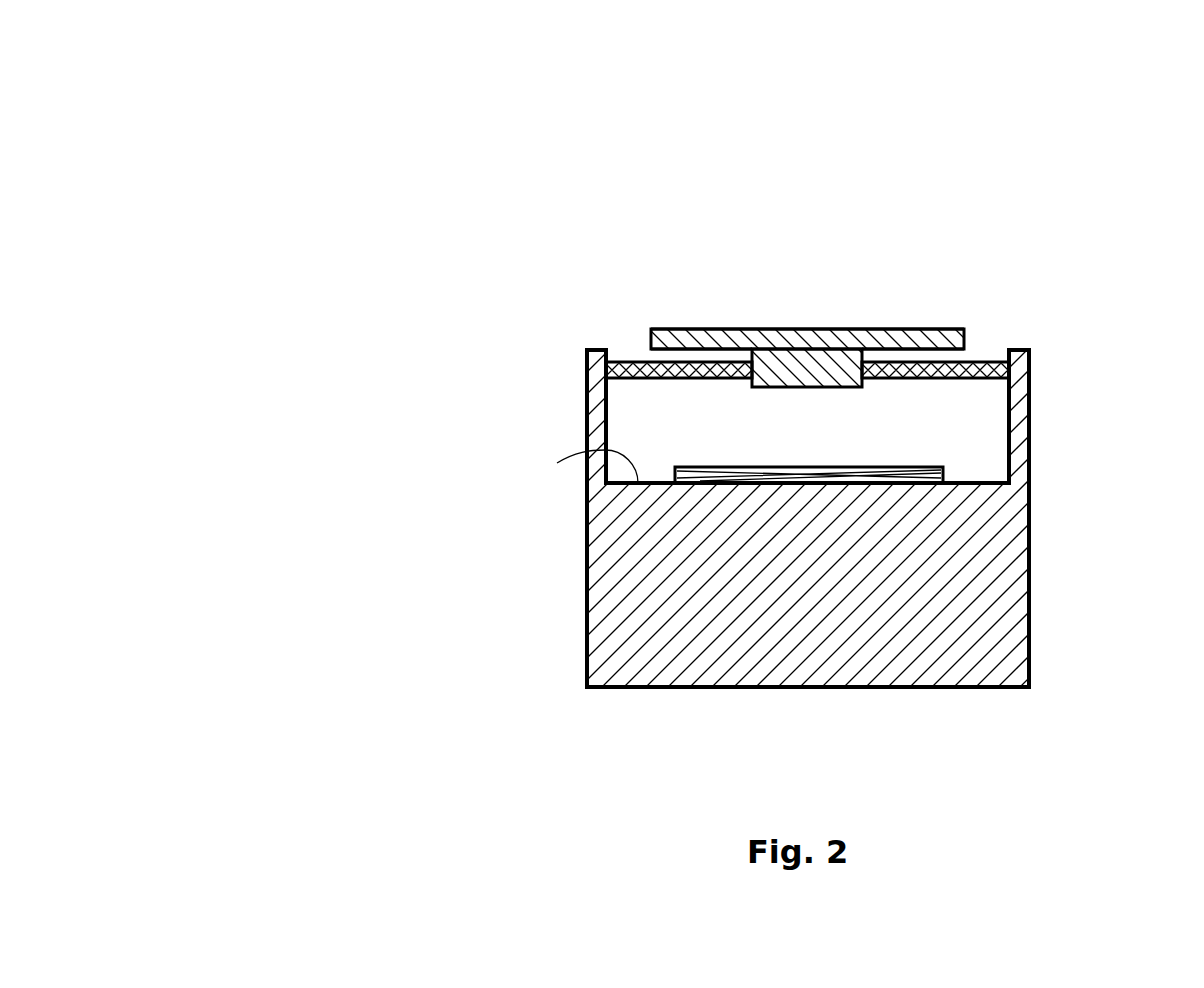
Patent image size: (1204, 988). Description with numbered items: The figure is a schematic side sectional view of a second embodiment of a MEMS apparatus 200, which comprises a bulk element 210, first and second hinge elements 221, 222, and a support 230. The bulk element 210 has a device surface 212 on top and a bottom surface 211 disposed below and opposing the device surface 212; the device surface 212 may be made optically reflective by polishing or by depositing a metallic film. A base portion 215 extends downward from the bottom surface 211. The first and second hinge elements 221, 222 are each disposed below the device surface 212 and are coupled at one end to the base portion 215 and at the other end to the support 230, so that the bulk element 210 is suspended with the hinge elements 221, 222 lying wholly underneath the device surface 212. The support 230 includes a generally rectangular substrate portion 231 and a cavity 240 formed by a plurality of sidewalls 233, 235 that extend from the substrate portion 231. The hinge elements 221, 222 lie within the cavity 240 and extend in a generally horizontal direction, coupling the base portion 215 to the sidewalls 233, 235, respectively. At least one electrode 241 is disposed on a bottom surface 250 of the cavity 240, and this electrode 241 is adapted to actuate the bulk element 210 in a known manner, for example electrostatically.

The MEMS apparatus 200 is at (340, 141).
The bulk element 210 is at (738, 315).
The bottom surface 211 is at (660, 357).
The device surface 212 is at (880, 330).
The base portion 215 is at (806, 358).
The first hinge element 221 is at (663, 380).
The second hinge element 222 is at (947, 380).
The support 230 is at (570, 579).
The substrate portion 231 is at (830, 687).
The sidewall 233 is at (587, 397).
The sidewall 235 is at (1033, 378).
The cavity 240 is at (965, 468).
The electrode 241 is at (826, 467).
The bottom surface of the cavity 250 is at (572, 467).